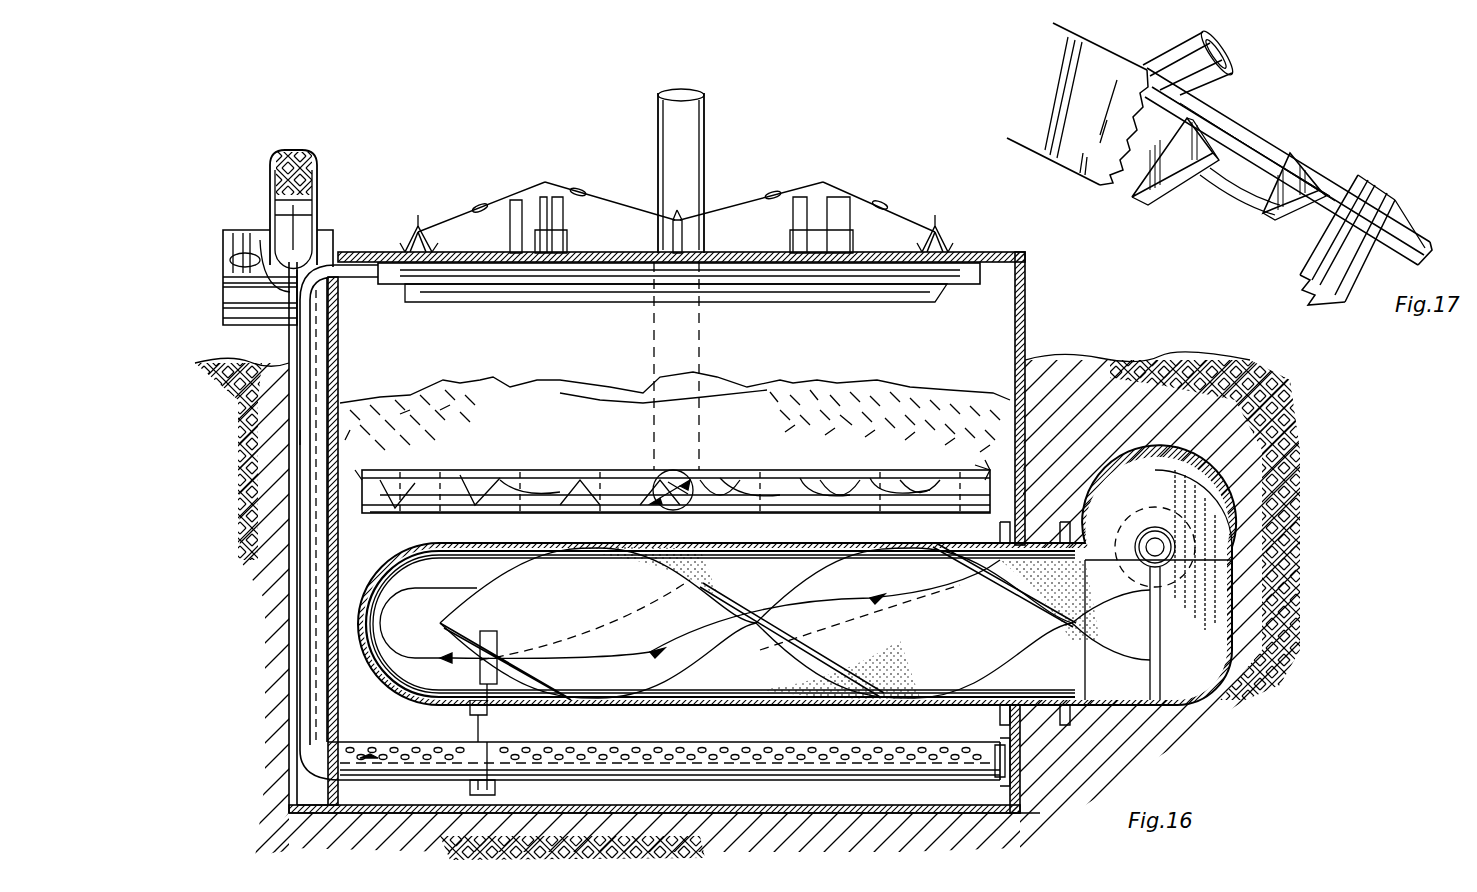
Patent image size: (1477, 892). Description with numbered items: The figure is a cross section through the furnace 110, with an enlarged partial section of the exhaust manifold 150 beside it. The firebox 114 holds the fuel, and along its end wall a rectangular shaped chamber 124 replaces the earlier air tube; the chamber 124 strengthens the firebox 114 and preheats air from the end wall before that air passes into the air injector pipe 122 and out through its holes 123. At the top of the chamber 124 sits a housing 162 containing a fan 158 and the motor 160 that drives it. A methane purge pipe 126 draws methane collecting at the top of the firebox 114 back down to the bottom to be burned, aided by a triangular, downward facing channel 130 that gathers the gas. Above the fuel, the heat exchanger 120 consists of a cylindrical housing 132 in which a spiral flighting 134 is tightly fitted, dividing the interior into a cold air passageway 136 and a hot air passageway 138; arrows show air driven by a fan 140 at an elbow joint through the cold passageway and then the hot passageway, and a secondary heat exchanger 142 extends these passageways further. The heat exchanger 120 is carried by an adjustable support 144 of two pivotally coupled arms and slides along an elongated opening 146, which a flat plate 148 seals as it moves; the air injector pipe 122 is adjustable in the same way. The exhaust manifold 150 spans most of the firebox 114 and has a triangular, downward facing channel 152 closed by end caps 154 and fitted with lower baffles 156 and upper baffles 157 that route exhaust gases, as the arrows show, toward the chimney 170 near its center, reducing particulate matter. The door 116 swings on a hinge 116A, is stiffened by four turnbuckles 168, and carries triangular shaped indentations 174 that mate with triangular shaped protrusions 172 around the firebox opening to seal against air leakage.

In FIG. 16, the furnace 110 is at (988, 232).
In FIG. 16, the firebox 114 is at (1010, 252).
In FIG. 16, the door 116 is at (480, 243).
In FIG. 16, the hinge 116A is at (565, 200).
In FIG. 16, the heat exchanger 120 is at (510, 535).
In FIG. 16, the air injector pipe 122 is at (363, 742).
In FIG. 16, the holes 123 is at (455, 742).
In FIG. 16, the rectangular shaped chamber 124 is at (293, 343).
In FIG. 16, the methane purge pipe 126 is at (305, 440).
In FIG. 16, the downward facing channel 130 is at (963, 268).
In FIG. 16, the cylindrical housing 132 is at (362, 665).
In FIG. 16, the spiral flighting 134 is at (577, 575).
In FIG. 16, the cold air passageway 136 is at (575, 470).
In FIG. 16, the hot air passageway 138 is at (613, 565).
In FIG. 16, the fan 140 is at (1200, 440).
In FIG. 16, the secondary heat exchanger 142 is at (675, 412).
In FIG. 16, the adjustable support 144 is at (513, 795).
In FIG. 16, the elongated opening 146 is at (1020, 540).
In FIG. 16, the flat plate 148 is at (1030, 752).
In FIG. 16, the exhaust manifold 150 is at (827, 470).
In FIG. 17, the exhaust manifold 150 is at (1270, 110).
In FIG. 16, the downward facing channel 152 is at (915, 472).
In FIG. 17, the downward facing channel 152 is at (1393, 210).
In FIG. 16, the end caps 154 is at (368, 448).
In FIG. 16, the lower baffles 156 is at (493, 462).
In FIG. 17, the lower baffles 156 is at (1173, 180).
In FIG. 16, the upper baffles 157 is at (390, 474).
In FIG. 17, the upper baffles 157 is at (1275, 208).
In FIG. 16, the fan 158 is at (278, 176).
In FIG. 16, the motor 160 is at (263, 230).
In FIG. 16, the housing 162 is at (227, 230).
In FIG. 16, the turnbuckles 168 is at (672, 215).
In FIG. 16, the chimney 170 is at (718, 470).
In FIG. 17, the chimney 170 is at (1232, 80).
In FIG. 16, the triangular shaped protrusions 172 is at (418, 226).
In FIG. 16, the triangular shaped indentations 174 is at (418, 240).